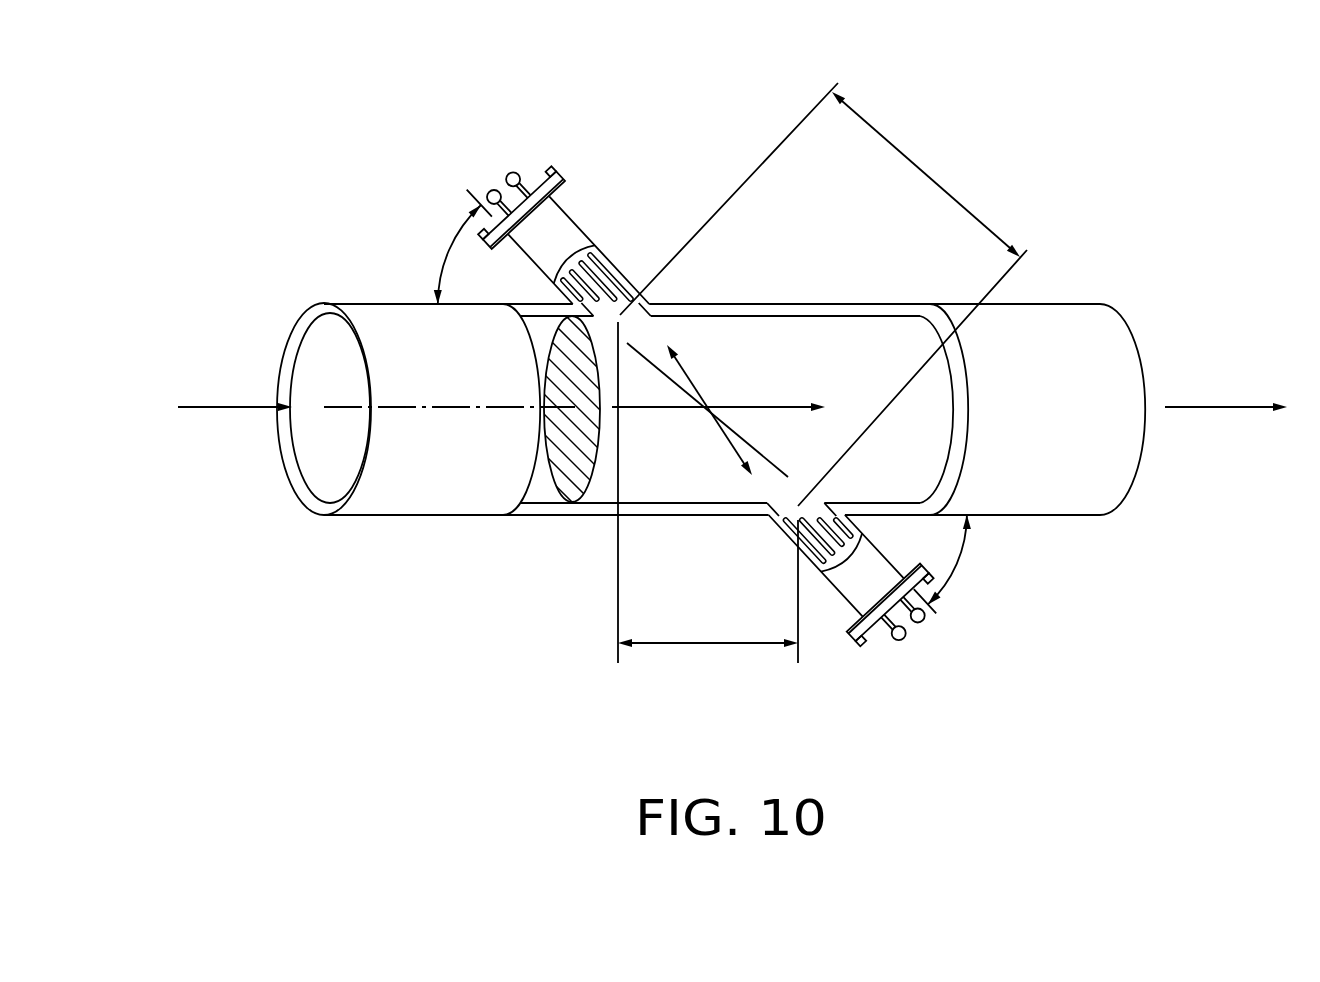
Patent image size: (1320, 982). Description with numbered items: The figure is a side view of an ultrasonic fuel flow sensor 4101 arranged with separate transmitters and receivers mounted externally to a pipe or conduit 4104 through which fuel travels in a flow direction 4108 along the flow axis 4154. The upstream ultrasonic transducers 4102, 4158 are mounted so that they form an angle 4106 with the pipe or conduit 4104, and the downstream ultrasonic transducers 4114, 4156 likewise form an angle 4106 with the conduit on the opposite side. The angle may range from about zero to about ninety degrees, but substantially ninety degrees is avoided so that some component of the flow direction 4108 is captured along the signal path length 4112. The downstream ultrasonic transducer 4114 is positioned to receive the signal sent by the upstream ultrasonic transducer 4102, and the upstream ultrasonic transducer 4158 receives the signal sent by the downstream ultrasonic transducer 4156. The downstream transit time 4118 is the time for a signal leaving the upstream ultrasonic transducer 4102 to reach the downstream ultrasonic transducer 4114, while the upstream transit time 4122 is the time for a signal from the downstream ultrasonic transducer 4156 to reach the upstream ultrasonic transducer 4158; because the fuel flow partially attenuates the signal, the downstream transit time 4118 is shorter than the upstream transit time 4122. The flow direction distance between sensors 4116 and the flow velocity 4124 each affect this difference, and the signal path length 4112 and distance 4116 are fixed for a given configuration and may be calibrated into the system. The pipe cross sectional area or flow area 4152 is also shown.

The ultrasonic fuel flow sensor 4101 is at (1082, 132).
The upstream ultrasonic transducer 4102 is at (473, 180).
The pipe or conduit 4104 is at (408, 500).
The angle 4106 is at (448, 252).
The flow direction 4108 is at (237, 409).
The signal path length 4112 is at (925, 174).
The downstream ultrasonic transducer 4114 is at (898, 652).
The flow direction distance between sensors 4116 is at (704, 645).
The downstream transit time 4118 is at (708, 433).
The upstream transit time 4122 is at (705, 387).
The flow velocity 4124 is at (766, 409).
The pipe cross sectional area or flow area 4152 is at (572, 470).
The flow axis 4154 is at (490, 405).
The downstream ultrasonic transducer 4156 is at (933, 625).
The upstream ultrasonic transducer 4158 is at (515, 163).